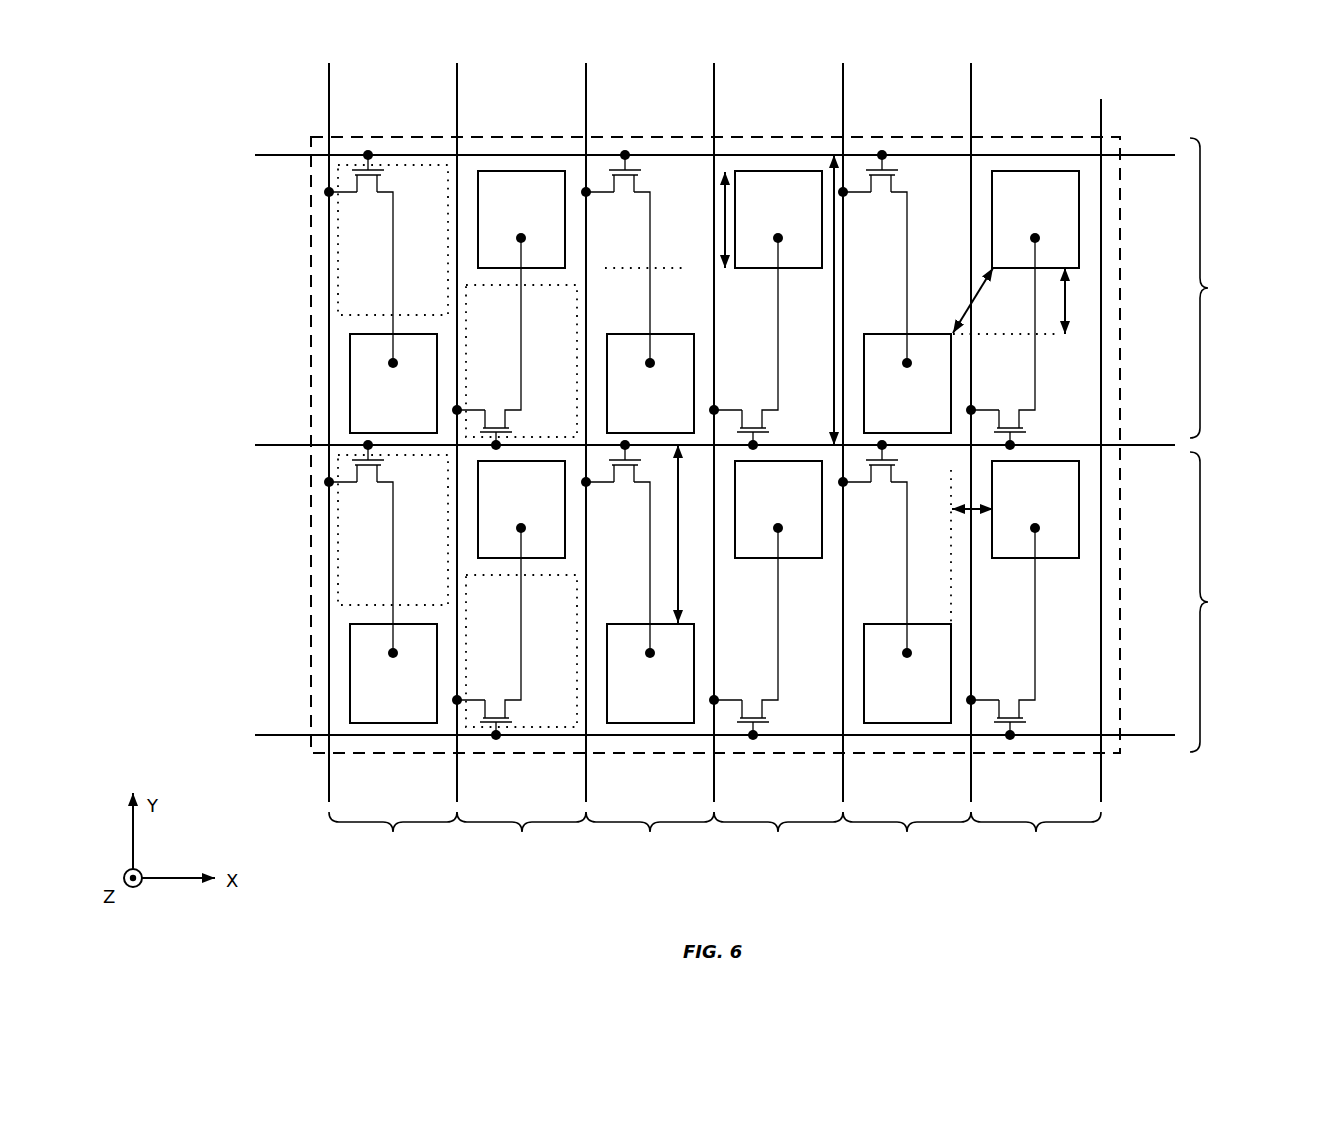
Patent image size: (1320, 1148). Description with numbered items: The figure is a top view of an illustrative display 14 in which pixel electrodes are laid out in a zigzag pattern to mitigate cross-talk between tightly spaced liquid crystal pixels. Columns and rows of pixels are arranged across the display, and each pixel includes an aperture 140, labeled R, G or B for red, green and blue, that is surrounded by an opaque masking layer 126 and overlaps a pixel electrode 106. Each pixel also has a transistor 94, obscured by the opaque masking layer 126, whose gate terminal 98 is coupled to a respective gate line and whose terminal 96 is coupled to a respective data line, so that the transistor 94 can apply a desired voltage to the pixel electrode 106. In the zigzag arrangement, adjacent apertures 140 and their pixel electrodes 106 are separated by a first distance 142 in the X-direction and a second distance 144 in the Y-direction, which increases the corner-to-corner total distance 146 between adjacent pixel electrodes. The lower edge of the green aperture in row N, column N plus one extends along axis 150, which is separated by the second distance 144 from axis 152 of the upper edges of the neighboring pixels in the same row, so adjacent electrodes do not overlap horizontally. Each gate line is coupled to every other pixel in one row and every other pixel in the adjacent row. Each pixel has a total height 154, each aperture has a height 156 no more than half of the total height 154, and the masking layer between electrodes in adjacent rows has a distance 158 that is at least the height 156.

The display pixel array 14 is at (1132, 113).
The transistor 94 is at (338, 240).
The terminal 96 is at (327, 192).
The gate terminal 98 is at (368, 150).
The pixel electrode 106 is at (663, 412).
The opaque masking layer 126 is at (776, 140).
The aperture 140 is at (658, 420).
The first distance 142 is at (966, 515).
The second distance 144 is at (1068, 297).
The total distance 146 is at (988, 277).
The axis 150 is at (598, 266).
The axis 152 is at (598, 333).
The total height 154 is at (832, 339).
The height 156 is at (725, 221).
The distance 158 is at (678, 553).